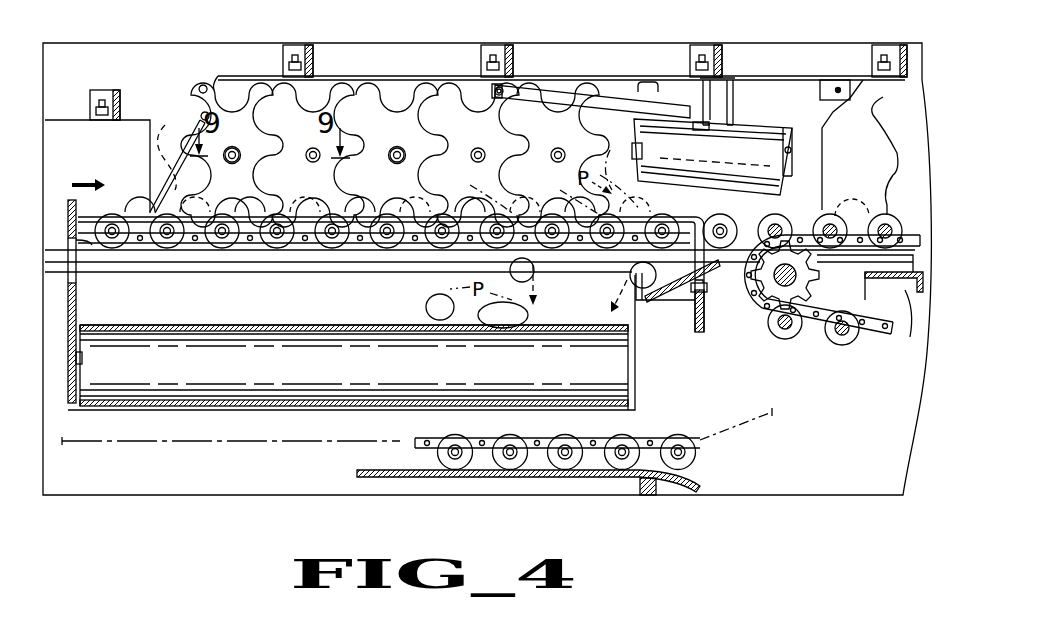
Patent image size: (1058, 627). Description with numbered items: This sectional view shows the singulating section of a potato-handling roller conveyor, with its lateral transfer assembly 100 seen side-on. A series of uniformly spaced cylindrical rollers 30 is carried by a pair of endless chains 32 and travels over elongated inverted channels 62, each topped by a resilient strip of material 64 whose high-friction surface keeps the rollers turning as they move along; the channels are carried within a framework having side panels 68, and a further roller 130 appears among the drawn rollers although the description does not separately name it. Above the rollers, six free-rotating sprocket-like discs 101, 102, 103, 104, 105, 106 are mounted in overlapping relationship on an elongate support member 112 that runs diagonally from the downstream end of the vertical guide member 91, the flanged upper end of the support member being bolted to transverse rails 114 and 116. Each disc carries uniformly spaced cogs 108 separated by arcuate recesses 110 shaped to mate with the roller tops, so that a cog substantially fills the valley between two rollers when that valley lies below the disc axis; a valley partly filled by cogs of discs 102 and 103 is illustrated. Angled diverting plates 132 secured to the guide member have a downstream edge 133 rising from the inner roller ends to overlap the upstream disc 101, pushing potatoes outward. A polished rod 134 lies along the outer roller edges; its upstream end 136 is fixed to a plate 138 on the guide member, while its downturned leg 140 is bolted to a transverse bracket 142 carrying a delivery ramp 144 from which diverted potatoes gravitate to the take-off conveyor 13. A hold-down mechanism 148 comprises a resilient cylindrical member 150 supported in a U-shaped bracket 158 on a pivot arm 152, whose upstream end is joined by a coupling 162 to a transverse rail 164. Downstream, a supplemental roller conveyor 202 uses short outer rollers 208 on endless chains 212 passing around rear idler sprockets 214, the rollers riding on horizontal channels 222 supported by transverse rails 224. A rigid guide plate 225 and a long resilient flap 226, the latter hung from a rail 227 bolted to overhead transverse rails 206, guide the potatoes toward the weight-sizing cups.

The take-off conveyor 13 is at (290, 320).
The rollers 30 is at (625, 435).
The endless chains 32 is at (418, 246).
The inverted channels 62 is at (393, 262).
The resilient strip of material 64 is at (306, 252).
The side panels 68 is at (775, 492).
The vertical guide member 91 is at (95, 150).
The lateral transfer assemblies 100 is at (395, 117).
The upstream disc 101 is at (248, 108).
The disc 102 is at (352, 83).
The disc 103 is at (418, 137).
The disc 104 is at (515, 142).
The disc 105 is at (586, 142).
The downstream disc 106 is at (648, 84).
The cogs 108 is at (200, 88).
The arcuate recesses 110 is at (198, 192).
The support member 112 is at (722, 104).
The transverse rail 114 is at (326, 31).
The transverse rail 116 is at (722, 58).
The roller 130 is at (607, 246).
The angled diverting plates 132 is at (155, 172).
The downstream edge 133 is at (170, 214).
The rod 134 is at (232, 236).
The upstream end 136 is at (88, 225).
The plate 138 is at (75, 262).
The downturned leg 140 is at (690, 296).
The bracket 142 is at (638, 330).
The delivery board or ramp 144 is at (694, 333).
The hold-down mechanism 148 is at (748, 125).
The resilient cylindrical member 150 is at (763, 167).
The pivot arm 152 is at (592, 96).
The U-shaped bracket 158 is at (793, 149).
The coupling 162 is at (510, 86).
The transverse rail 164 is at (495, 45).
The supplemental roller conveyor 202 is at (816, 342).
The transverse rails 206 is at (905, 60).
The outer rollers 208 is at (843, 202).
The endless chains 212 is at (877, 338).
The rear idler sprockets 214 is at (782, 288).
The horizontal channels 222 is at (850, 270).
The transverse rails 224 is at (918, 300).
The rigid guide plate 225 is at (893, 110).
The resilient flap 226 is at (882, 157).
The rail 227 is at (843, 80).